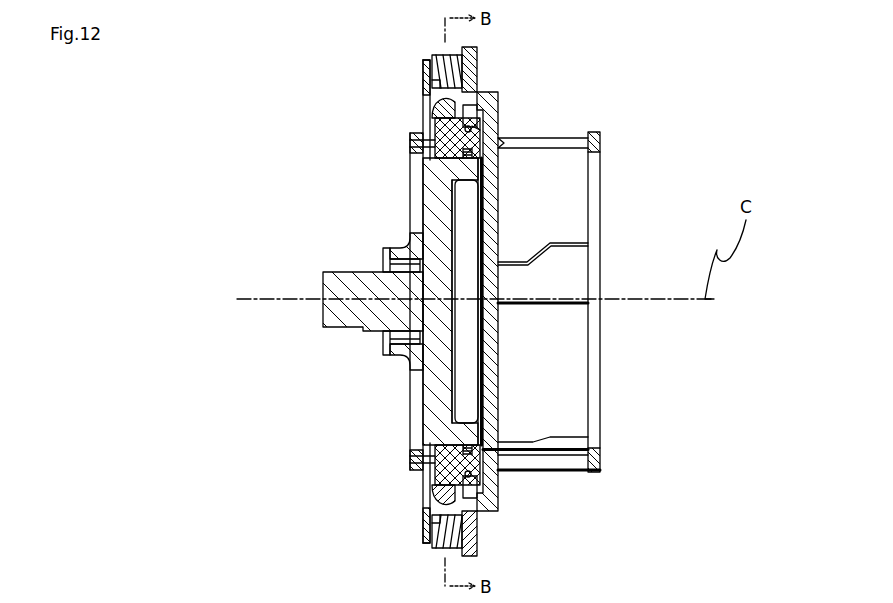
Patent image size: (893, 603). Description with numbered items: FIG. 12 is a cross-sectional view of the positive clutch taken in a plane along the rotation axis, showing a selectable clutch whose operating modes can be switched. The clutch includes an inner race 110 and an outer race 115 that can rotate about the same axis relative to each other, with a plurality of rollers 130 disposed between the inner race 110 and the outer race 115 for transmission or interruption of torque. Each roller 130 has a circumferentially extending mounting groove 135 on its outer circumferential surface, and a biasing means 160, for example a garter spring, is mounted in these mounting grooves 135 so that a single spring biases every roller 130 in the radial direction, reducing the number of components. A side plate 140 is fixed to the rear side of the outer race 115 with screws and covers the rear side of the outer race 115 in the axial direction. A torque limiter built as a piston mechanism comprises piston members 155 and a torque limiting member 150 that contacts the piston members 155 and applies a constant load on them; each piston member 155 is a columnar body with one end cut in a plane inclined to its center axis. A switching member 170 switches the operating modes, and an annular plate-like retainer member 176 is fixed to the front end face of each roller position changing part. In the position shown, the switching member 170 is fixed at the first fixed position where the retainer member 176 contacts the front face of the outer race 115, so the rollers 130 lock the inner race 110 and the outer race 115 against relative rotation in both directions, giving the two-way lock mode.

The inner race 110 is at (423, 213).
The outer race 115 is at (430, 423).
The rollers 130 is at (500, 125).
The mounting groove 135 is at (490, 107).
The side plate 140 is at (474, 533).
The torque limiting member 150 is at (430, 78).
The piston members 155 is at (485, 90).
The biasing means 160 is at (498, 488).
The switching member 170 is at (603, 352).
The retainer member 176 is at (410, 143).